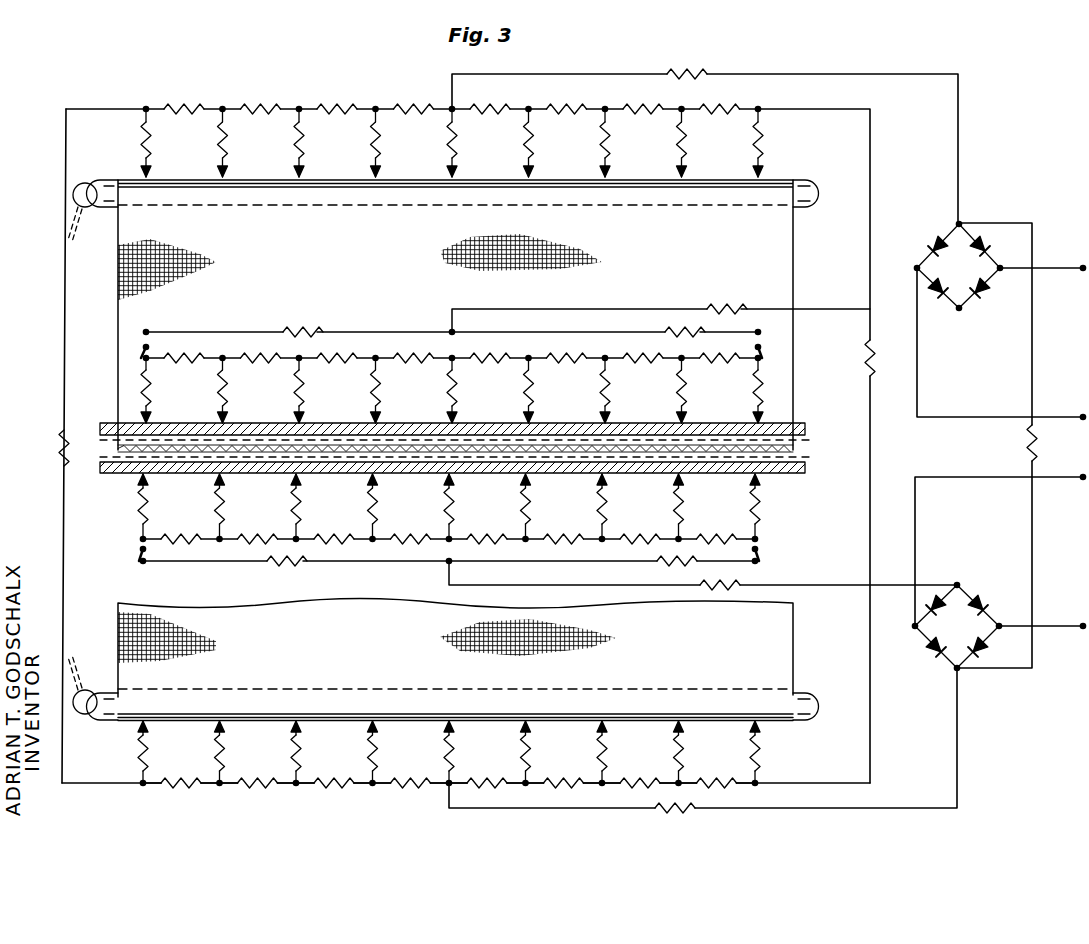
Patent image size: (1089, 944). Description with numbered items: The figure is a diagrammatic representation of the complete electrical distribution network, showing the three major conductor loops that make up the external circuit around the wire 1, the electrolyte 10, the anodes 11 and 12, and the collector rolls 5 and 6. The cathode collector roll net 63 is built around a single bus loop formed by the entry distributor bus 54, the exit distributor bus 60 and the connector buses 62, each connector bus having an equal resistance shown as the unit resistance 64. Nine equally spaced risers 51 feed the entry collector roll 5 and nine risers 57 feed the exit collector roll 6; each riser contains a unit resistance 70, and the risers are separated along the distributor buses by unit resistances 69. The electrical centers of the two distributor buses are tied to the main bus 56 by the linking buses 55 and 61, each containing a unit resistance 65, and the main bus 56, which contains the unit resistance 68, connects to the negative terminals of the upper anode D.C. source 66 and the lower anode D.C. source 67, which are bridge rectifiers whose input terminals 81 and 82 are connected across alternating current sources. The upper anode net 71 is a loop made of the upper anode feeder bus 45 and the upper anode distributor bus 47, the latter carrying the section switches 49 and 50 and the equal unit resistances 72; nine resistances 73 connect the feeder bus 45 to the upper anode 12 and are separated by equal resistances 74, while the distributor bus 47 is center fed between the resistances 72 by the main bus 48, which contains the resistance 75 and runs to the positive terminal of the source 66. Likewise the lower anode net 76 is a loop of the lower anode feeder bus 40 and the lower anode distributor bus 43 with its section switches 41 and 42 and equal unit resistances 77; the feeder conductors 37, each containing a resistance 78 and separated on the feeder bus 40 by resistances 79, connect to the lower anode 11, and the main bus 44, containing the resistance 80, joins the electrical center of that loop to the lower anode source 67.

The wire 1 is at (118, 298).
The entry collector roll 5 is at (85, 183).
The exit collector roll 6 is at (85, 716).
The electrolyte 10 is at (102, 427).
The lower anode 11 is at (110, 475).
The upper anode 12 is at (118, 440).
The feeder conductors 37 is at (140, 523).
The lower anode feeder bus 40 is at (219, 541).
The section switch 41 is at (138, 556).
The section switch 42 is at (762, 559).
The lower anode distributor bus 43 is at (372, 562).
The main bus 44 is at (546, 583).
The upper anode feeder bus 45 is at (232, 360).
The upper anode distributor bus 47 is at (562, 331).
The main bus 48 is at (597, 308).
The section switch 49 is at (143, 331).
The section switch 50 is at (763, 342).
The risers 51 is at (150, 170).
The entry distributor bus 54 is at (108, 107).
The linking bus 55 is at (600, 73).
The main bus 56 is at (1034, 545).
The risers 57 is at (148, 726).
The exit distributor bus 60 is at (90, 785).
The linking bus 61 is at (800, 809).
The connector buses 62 is at (871, 181).
The cathode collector roll net 63 is at (56, 290).
The unit resistance 64 is at (60, 440).
The unit resistances 65 is at (688, 73).
The upper anode D.C. source 66 is at (967, 277).
The lower anode D.C. source 67 is at (966, 637).
The unit resistance 68 is at (1037, 441).
The unit resistance 69 is at (180, 106).
The unit resistance 70 is at (143, 142).
The upper anode net 71 is at (266, 330).
The unit resistances 72 is at (304, 330).
The resistances 73 is at (160, 400).
The resistances 74 is at (186, 356).
The resistance 75 is at (719, 307).
The lower anode net 76 is at (165, 564).
The unit resistances 77 is at (288, 568).
The resistances 78 is at (150, 497).
The resistances 79 is at (176, 536).
The resistance 80 is at (740, 584).
The input terminals 81 is at (915, 268).
The input terminals 82 is at (1001, 620).